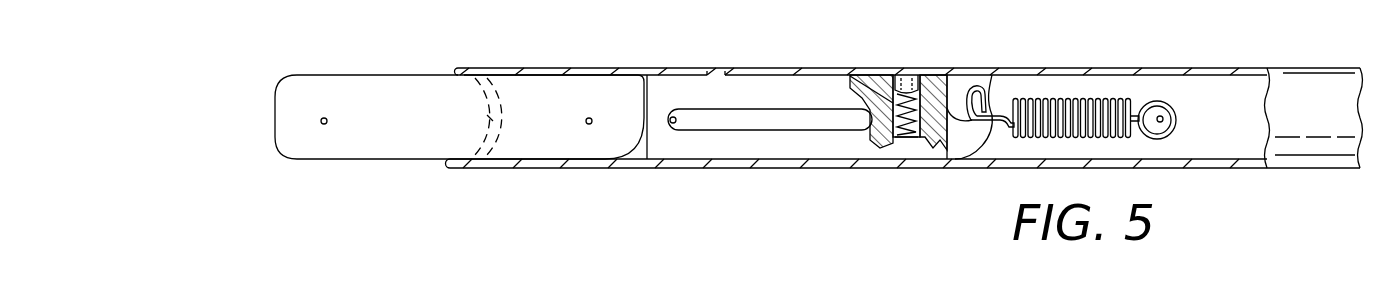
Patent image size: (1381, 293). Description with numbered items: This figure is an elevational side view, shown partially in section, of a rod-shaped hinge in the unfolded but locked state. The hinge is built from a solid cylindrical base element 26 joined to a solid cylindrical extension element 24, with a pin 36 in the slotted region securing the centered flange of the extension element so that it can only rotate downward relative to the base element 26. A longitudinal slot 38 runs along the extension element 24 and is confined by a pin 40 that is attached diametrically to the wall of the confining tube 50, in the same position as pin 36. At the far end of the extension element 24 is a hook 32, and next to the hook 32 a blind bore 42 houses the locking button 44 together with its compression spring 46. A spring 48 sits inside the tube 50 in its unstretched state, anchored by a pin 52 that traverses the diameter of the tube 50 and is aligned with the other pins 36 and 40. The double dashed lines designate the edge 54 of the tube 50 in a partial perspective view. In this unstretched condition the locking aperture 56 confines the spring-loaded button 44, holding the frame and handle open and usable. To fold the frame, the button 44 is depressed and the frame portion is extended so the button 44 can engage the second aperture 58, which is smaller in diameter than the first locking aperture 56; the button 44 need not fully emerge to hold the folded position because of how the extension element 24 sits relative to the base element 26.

The extension element 24 is at (800, 145).
The base element 26 is at (405, 130).
The hook 32 is at (990, 80).
The pin 36 is at (324, 118).
The longitudinal slot 38 is at (723, 120).
The pin 40 is at (670, 118).
The blind bore 42 is at (923, 125).
The locking button 44 is at (928, 82).
The compression spring 46 is at (852, 78).
The spring 48 is at (1066, 100).
The tube 50 is at (1302, 95).
The pin 52 is at (1159, 116).
The edge of the tube 54 is at (490, 118).
The locking aperture 56 is at (900, 80).
The second aperture 58 is at (717, 72).